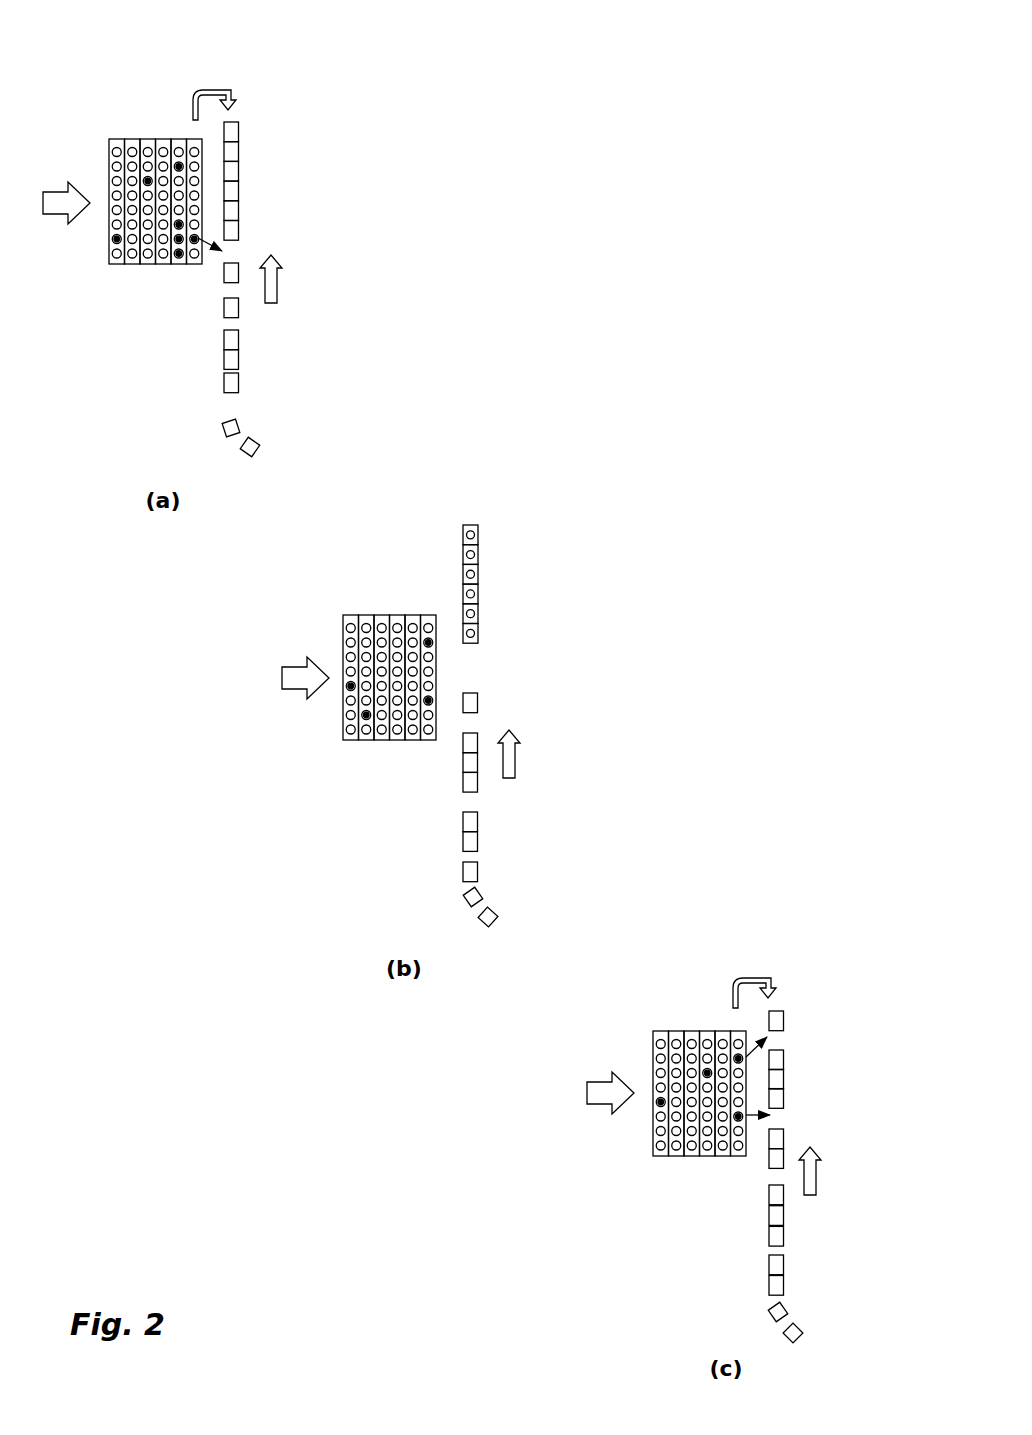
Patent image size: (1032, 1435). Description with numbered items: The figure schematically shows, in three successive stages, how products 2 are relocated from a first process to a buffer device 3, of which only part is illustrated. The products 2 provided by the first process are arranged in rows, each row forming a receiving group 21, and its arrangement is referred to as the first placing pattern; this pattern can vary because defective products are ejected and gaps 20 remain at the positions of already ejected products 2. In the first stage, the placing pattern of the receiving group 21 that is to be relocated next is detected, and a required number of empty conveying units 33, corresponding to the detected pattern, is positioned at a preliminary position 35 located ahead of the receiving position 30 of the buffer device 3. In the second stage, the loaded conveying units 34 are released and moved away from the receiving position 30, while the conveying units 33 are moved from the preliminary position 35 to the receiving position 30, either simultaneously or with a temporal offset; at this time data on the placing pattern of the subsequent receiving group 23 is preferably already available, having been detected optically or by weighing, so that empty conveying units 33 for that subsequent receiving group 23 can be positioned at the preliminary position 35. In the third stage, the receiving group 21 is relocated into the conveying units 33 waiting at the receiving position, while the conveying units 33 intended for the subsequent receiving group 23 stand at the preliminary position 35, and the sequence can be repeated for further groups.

The products 2 is at (134, 152).
The buffer device 3 is at (378, 158).
The gaps 20 is at (115, 243).
The receiving group 21 is at (182, 121).
The subsequent receiving group 23 is at (412, 604).
The receiving position 30 is at (264, 139).
The conveying units 33 is at (230, 213).
The loaded conveying units 34 is at (477, 617).
The preliminary position 35 is at (274, 370).